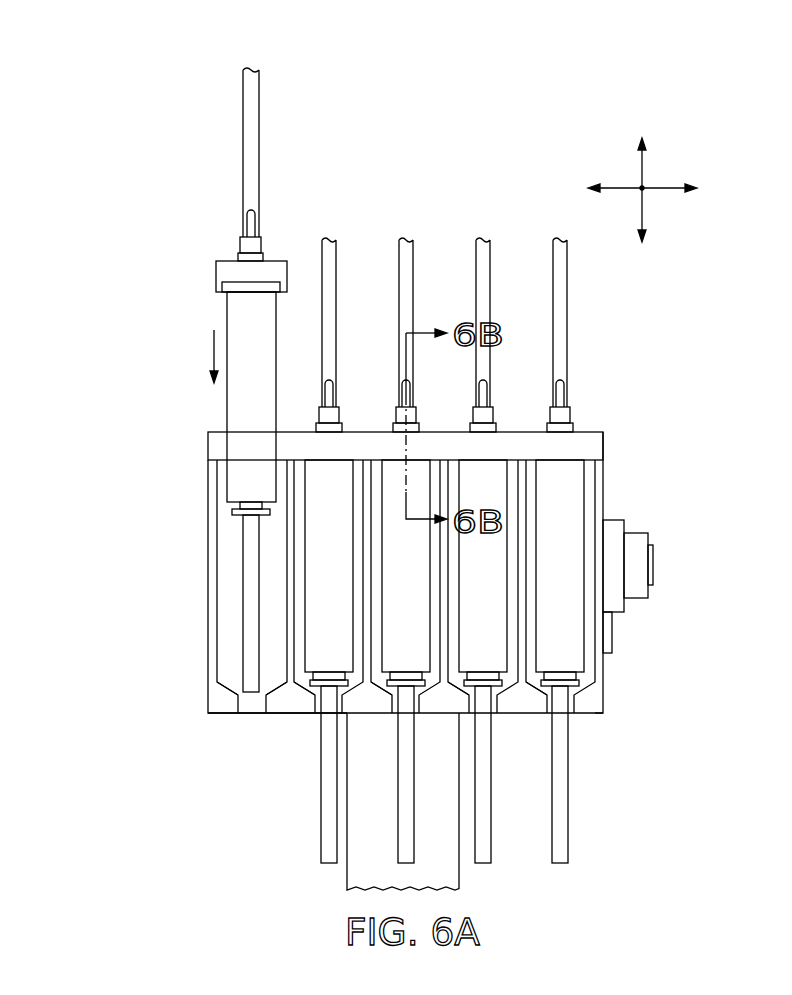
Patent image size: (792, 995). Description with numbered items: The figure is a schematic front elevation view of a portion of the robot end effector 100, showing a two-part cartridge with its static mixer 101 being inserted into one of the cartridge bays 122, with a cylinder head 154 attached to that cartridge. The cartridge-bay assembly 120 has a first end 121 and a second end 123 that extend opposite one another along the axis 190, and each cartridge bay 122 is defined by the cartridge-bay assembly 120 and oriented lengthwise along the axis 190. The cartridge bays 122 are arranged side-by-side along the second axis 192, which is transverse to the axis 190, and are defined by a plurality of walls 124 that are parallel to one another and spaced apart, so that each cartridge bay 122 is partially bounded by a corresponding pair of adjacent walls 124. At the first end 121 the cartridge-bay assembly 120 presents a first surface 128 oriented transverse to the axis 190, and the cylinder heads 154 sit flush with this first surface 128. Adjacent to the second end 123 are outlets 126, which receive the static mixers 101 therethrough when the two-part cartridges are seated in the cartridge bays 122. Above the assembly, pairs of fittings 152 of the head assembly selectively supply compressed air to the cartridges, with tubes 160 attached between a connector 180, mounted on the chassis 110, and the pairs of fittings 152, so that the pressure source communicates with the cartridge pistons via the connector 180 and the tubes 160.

The robot end effector 100 is at (190, 138).
The static mixer 101 is at (243, 571).
The chassis 110 is at (460, 875).
The cartridge-bay assembly 120 is at (203, 502).
The first end 121 is at (618, 432).
The cartridge bay 122 is at (228, 687).
The second end 123 is at (627, 712).
The wall 124 is at (450, 592).
The outlet 126 is at (245, 729).
The first surface 128 is at (222, 432).
The fitting 152 is at (240, 244).
The cylinder head 154 is at (216, 276).
The tube 160 is at (259, 181).
The connector 180 is at (655, 562).
The axis 190 is at (640, 158).
The second axis 192 is at (663, 187).